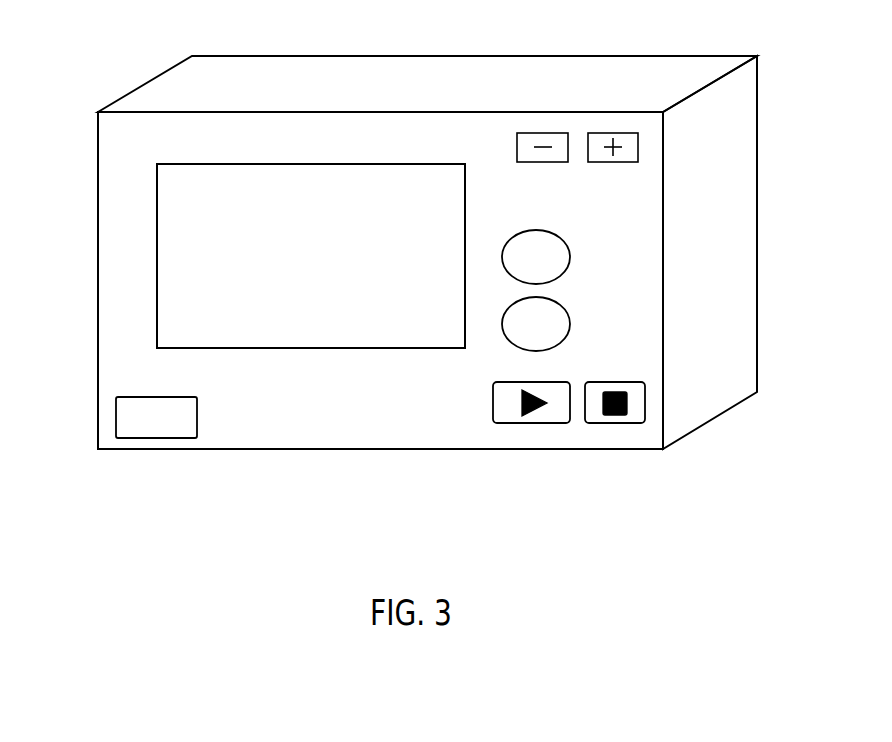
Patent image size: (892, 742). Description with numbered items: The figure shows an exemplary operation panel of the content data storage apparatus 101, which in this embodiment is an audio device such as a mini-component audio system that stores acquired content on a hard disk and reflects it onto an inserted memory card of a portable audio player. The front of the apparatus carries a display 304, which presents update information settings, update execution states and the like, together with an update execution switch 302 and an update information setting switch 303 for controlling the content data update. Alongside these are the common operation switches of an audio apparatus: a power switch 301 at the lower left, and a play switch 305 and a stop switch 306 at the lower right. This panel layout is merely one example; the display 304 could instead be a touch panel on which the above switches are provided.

The content data storage apparatus 101 is at (612, 72).
The power switch 301 is at (157, 438).
The update execution switch 302 is at (570, 257).
The update information setting switch 303 is at (570, 324).
The display 304 is at (157, 273).
The play switch 305 is at (532, 423).
The stop switch 306 is at (613, 423).